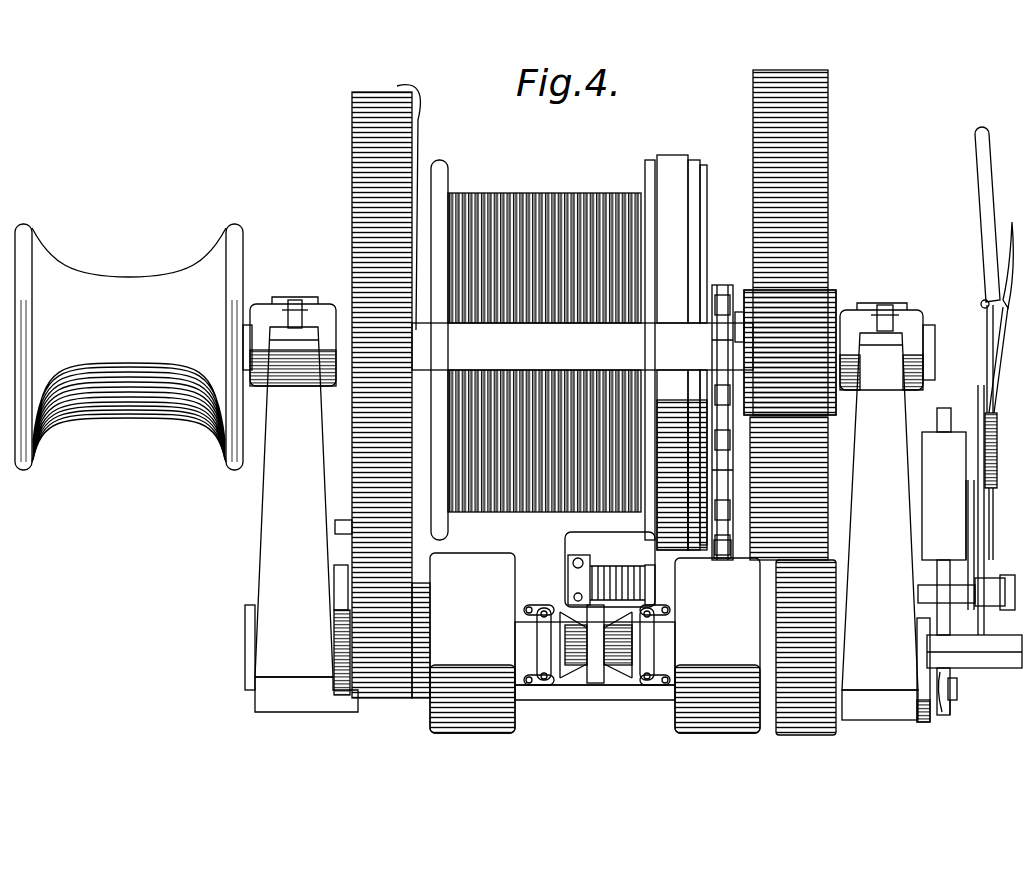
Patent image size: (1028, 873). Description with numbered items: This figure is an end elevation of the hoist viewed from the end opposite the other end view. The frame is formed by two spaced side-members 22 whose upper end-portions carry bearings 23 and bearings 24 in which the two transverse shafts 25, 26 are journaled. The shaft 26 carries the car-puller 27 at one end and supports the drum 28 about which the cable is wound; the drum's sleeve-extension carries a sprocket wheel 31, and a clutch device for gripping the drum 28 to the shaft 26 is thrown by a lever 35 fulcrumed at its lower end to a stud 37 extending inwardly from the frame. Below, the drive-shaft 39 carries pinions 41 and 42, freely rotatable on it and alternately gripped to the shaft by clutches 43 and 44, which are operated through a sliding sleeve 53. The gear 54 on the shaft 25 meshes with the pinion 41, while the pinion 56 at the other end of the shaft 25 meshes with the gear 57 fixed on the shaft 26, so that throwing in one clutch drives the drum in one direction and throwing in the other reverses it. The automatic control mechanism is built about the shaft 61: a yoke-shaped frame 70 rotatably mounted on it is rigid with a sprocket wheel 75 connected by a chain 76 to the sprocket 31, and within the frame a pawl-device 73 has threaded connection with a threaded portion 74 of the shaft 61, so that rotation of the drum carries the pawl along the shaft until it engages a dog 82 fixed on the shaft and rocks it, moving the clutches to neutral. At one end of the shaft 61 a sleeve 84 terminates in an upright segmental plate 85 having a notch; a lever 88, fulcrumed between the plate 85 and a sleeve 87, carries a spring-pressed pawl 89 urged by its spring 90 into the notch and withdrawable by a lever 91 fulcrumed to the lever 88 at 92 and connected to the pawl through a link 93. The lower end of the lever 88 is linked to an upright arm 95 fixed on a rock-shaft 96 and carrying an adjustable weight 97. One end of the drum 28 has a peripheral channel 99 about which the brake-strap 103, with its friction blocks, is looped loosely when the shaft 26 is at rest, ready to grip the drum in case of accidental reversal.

The side-members 22 is at (581, 523).
The bearing 23 is at (917, 333).
The bearing 24 is at (848, 322).
The shaft 25 is at (582, 346).
The shaft 26 is at (248, 322).
The car-puller 27 is at (113, 290).
The drum 28 is at (540, 200).
The sprocket wheel 31 is at (712, 287).
The lever 35 is at (420, 172).
The stud 37 is at (345, 528).
The drive-shaft 39 is at (928, 652).
The pinion 41 is at (372, 637).
The pinion 42 is at (835, 650).
The clutch 43 is at (472, 643).
The clutch 44 is at (717, 645).
The sliding sleeve 53 is at (580, 672).
The gear 54 is at (365, 190).
The pinion 56 is at (765, 305).
The gear 57 is at (795, 498).
The shaft 61 is at (418, 592).
The yoke-shaped frame 70 is at (562, 535).
The pawl-device 73 is at (653, 580).
The threaded portion 74 is at (603, 565).
The sprocket wheel 75 is at (722, 548).
The chain 76 is at (735, 470).
The dog 82 is at (578, 575).
The sleeve 84 is at (965, 593).
The segmental plate 85 is at (976, 540).
The sleeve 87 is at (1008, 610).
The lever 88 is at (984, 567).
The spring-pressed pawl 89 is at (968, 490).
The spring 90 is at (988, 432).
The lever 91 is at (1002, 252).
The fulcrum 92 is at (984, 309).
The link 93 is at (1000, 356).
The upright arm 95 is at (951, 705).
The rock-shaft 96 is at (958, 690).
The weight 97 is at (944, 561).
The peripheral channel 99 is at (692, 160).
The brake-strap 103 is at (672, 236).